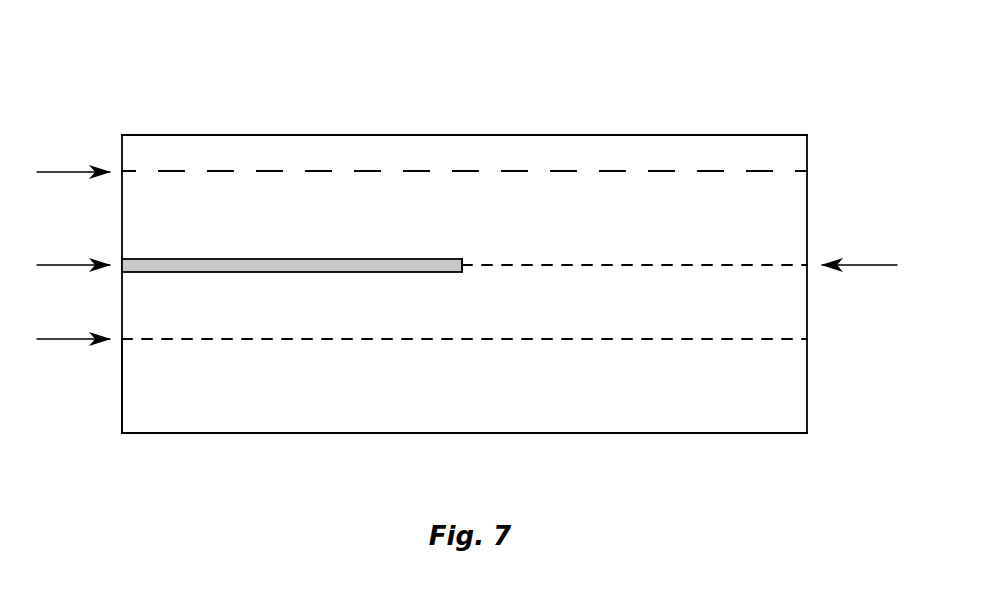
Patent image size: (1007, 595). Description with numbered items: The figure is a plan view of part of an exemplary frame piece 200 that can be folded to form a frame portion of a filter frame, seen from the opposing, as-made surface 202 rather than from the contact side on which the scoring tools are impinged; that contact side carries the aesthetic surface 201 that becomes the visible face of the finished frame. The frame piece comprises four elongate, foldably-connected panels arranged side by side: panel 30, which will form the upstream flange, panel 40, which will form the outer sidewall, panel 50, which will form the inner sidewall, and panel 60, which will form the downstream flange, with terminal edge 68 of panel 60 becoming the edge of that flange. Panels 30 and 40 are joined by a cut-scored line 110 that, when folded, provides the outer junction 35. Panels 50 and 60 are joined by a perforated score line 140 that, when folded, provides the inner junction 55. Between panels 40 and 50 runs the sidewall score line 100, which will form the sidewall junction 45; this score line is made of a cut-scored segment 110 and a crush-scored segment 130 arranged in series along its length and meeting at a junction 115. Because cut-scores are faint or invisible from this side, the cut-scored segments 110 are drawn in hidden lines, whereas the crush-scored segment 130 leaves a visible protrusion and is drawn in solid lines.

The frame piece 200 is at (264, 67).
The terminal edge 68 is at (499, 135).
The perforated score line 140 is at (660, 171).
The panel 60 is at (797, 152).
The panel 50 is at (797, 222).
The panel 40 is at (797, 312).
The panel 30 is at (797, 393).
The cut-scored line 110 is at (662, 264).
The crush-scored segment 130 is at (348, 258).
The junction 115 is at (476, 275).
The inner junction 55 is at (68, 170).
The sidewall junction 45 is at (70, 263).
The outer junction 35 is at (70, 337).
The sidewall score line 100 is at (857, 265).
The as-made surface 202 is at (145, 392).
The aesthetic surface 201 is at (307, 393).